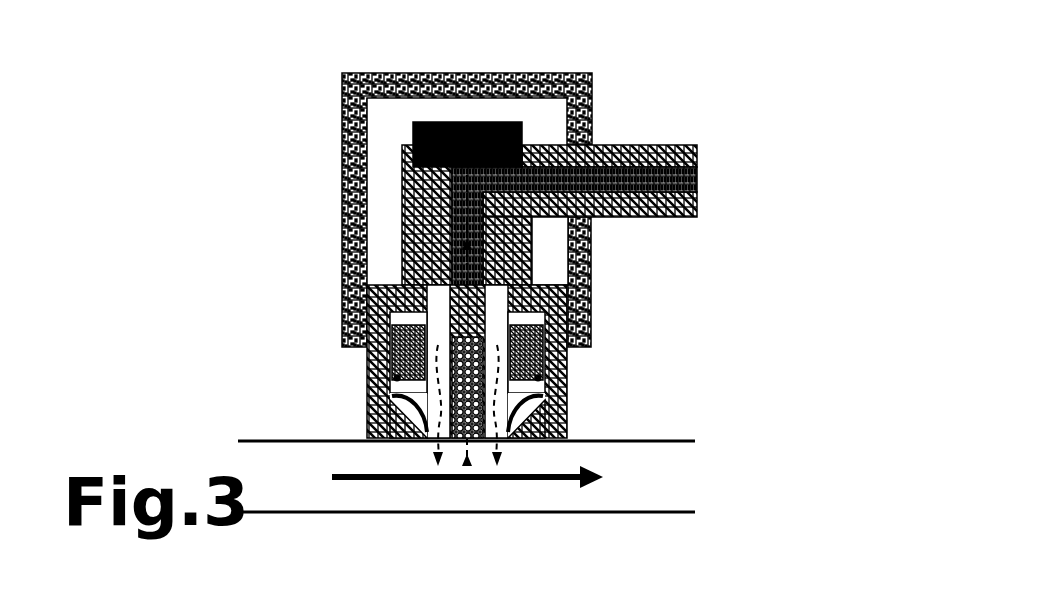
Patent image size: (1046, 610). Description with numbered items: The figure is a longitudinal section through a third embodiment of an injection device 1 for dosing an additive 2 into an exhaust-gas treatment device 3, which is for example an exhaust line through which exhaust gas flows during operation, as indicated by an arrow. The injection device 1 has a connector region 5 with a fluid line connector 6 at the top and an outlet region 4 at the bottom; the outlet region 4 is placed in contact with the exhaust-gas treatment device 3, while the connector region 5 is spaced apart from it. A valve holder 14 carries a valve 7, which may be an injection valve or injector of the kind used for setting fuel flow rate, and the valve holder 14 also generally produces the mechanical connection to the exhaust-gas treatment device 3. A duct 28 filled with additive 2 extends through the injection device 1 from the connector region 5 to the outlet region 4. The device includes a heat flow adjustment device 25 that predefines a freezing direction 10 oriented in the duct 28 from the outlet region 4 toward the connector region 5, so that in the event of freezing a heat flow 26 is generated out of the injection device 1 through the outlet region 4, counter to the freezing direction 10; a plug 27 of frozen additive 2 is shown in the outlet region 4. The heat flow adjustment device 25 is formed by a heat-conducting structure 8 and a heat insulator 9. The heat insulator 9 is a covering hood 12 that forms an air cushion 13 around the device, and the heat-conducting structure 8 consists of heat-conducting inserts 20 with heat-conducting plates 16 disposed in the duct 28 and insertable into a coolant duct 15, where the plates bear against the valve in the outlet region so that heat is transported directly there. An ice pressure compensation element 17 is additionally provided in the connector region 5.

The injection device 1 is at (225, 72).
The additive 2 is at (680, 178).
The exhaust-gas treatment device 3 is at (675, 440).
The outlet region 4 is at (455, 478).
The connector region 5 is at (486, 58).
The fluid line connector 6 is at (697, 145).
The valve 7 is at (367, 350).
The heat-conducting structure 8 is at (343, 323).
The heat insulator 9 is at (385, 252).
The freezing direction 10 is at (470, 308).
The covering hood 12 is at (342, 225).
The air cushion 13 is at (385, 252).
The valve holder 14 is at (567, 436).
The coolant duct 15 is at (530, 440).
The heat-conducting plates 16 is at (367, 385).
The ice pressure compensation element 17 is at (437, 122).
The heat-conducting inserts 20 is at (367, 375).
The heat flow adjustment device 25 is at (342, 143).
The heat flow 26 is at (520, 378).
The plug 27 is at (510, 350).
The duct 28 is at (487, 250).